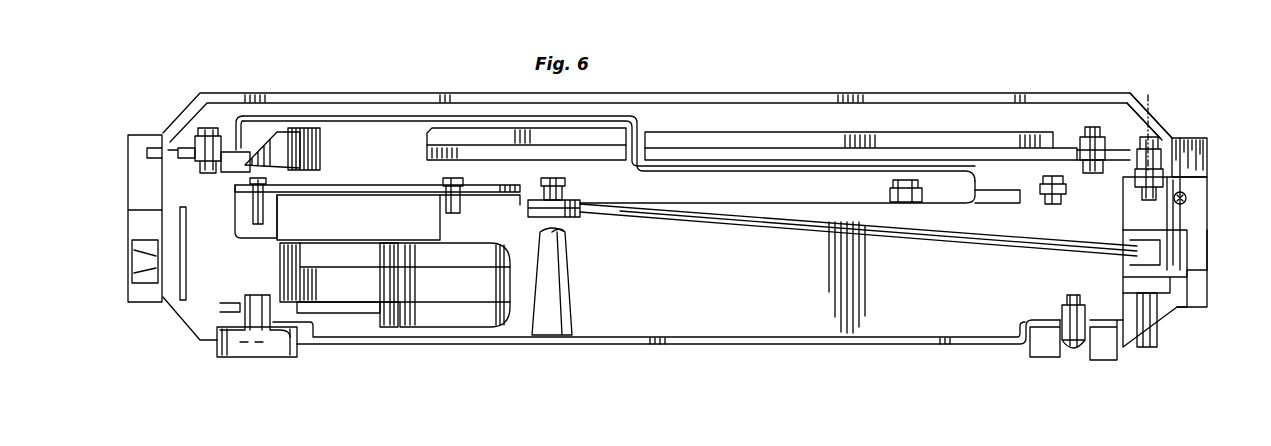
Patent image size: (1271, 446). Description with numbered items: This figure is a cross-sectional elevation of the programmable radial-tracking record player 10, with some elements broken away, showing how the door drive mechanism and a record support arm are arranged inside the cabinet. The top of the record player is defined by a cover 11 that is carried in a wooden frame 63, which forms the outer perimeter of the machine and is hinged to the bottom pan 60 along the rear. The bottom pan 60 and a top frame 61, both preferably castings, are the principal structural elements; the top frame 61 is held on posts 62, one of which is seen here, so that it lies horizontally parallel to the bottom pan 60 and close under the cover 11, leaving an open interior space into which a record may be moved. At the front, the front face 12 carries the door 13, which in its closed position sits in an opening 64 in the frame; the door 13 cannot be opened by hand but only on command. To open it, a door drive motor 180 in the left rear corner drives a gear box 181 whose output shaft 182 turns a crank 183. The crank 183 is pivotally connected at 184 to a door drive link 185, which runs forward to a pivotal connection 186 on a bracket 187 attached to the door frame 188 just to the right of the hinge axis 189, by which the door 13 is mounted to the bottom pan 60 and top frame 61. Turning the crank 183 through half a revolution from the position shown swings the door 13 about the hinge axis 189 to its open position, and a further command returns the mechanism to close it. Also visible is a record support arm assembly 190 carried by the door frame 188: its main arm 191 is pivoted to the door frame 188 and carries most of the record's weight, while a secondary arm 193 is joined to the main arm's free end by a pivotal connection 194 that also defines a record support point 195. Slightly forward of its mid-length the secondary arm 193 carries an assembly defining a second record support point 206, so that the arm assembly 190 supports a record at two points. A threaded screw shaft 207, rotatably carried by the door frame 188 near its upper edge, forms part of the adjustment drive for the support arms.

The record player 10 is at (791, 93).
The cover 11 is at (607, 98).
The front face 12 is at (1207, 141).
The door 13 is at (1208, 244).
The bottom pan 60 is at (576, 347).
The top frame 61 is at (650, 145).
The post 62 is at (247, 207).
The wooden frame 63 is at (140, 142).
The opening 64 is at (1205, 258).
The door drive motor 180 is at (420, 292).
The gear box 181 is at (392, 228).
The output shaft 182 is at (303, 147).
The crank 183 is at (283, 132).
The pivotal connection 184 is at (200, 128).
The door drive link 185 is at (432, 120).
The pivotal connection 186 is at (1047, 193).
The bracket 187 is at (1092, 258).
The door frame 188 is at (1200, 218).
The hinge axis 189 is at (1152, 98).
The record support arm assembly 190 is at (820, 233).
The main arm 191 is at (927, 225).
The secondary arm 193 is at (780, 201).
The pivotal connection 194 is at (548, 192).
The record support point 195 is at (574, 198).
The second record support point 206 is at (888, 196).
The screw shaft 207 is at (1190, 200).